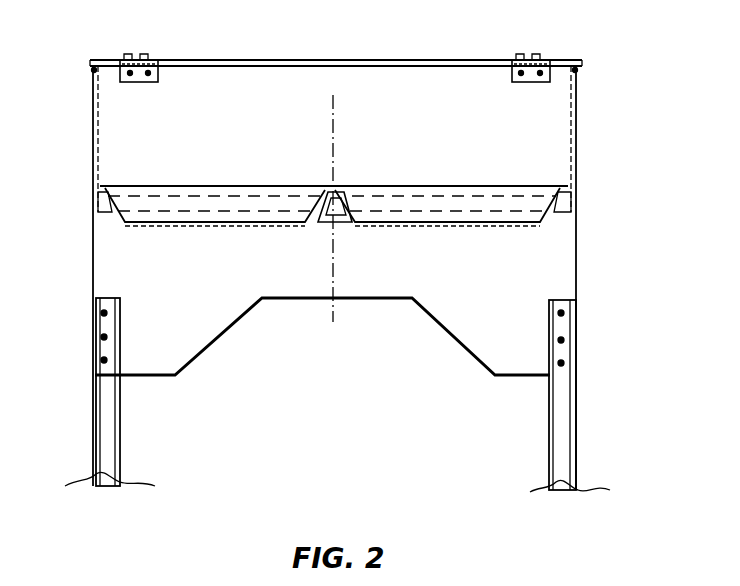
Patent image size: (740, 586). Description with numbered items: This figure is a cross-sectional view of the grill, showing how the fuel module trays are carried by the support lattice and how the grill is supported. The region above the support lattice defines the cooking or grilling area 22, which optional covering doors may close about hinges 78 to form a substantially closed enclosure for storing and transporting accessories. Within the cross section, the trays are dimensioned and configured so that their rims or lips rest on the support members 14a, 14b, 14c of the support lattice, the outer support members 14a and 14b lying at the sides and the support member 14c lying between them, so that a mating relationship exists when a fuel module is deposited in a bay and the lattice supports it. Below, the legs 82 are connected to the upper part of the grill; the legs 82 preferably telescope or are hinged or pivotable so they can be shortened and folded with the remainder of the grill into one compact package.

The cooking or grilling area 22 is at (378, 84).
The hinges 78 is at (120, 82).
The support member 14a is at (95, 222).
The support member 14b is at (568, 214).
The support member 14c is at (336, 220).
The legs 82 is at (465, 344).